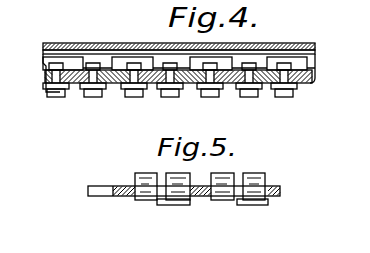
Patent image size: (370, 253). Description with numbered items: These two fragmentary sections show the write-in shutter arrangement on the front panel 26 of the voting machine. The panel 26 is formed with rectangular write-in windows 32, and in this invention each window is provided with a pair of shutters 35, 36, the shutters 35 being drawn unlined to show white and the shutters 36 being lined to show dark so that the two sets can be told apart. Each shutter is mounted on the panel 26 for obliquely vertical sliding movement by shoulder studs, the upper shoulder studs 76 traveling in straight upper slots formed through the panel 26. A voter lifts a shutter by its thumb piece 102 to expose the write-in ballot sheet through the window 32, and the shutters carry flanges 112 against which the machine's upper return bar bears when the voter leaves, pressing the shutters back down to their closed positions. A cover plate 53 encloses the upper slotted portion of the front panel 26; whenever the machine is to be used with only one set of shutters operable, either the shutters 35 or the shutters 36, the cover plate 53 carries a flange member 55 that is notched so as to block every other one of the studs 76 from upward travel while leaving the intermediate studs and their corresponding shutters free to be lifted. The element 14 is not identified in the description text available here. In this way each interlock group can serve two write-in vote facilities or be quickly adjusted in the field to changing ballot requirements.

In FIG. 4, the frame 14 is at (30, 65).
In FIG. 4, the front panel 26 is at (315, 71).
In FIG. 5, the front panel 26 is at (280, 190).
In FIG. 5, the write-in window 32 is at (133, 185).
In FIG. 4, the shutter 35 is at (83, 89).
In FIG. 5, the shutter 35 is at (148, 200).
In FIG. 4, the shutter 36 is at (143, 93).
In FIG. 5, the shutter 36 is at (172, 205).
In FIG. 4, the cover plate 53 is at (80, 43).
In FIG. 4, the flange member 55 is at (106, 57).
In FIG. 4, the shoulder stud 76 is at (57, 63).
In FIG. 5, the thumb piece 102 is at (181, 174).
In FIG. 4, the flange 112 is at (49, 93).